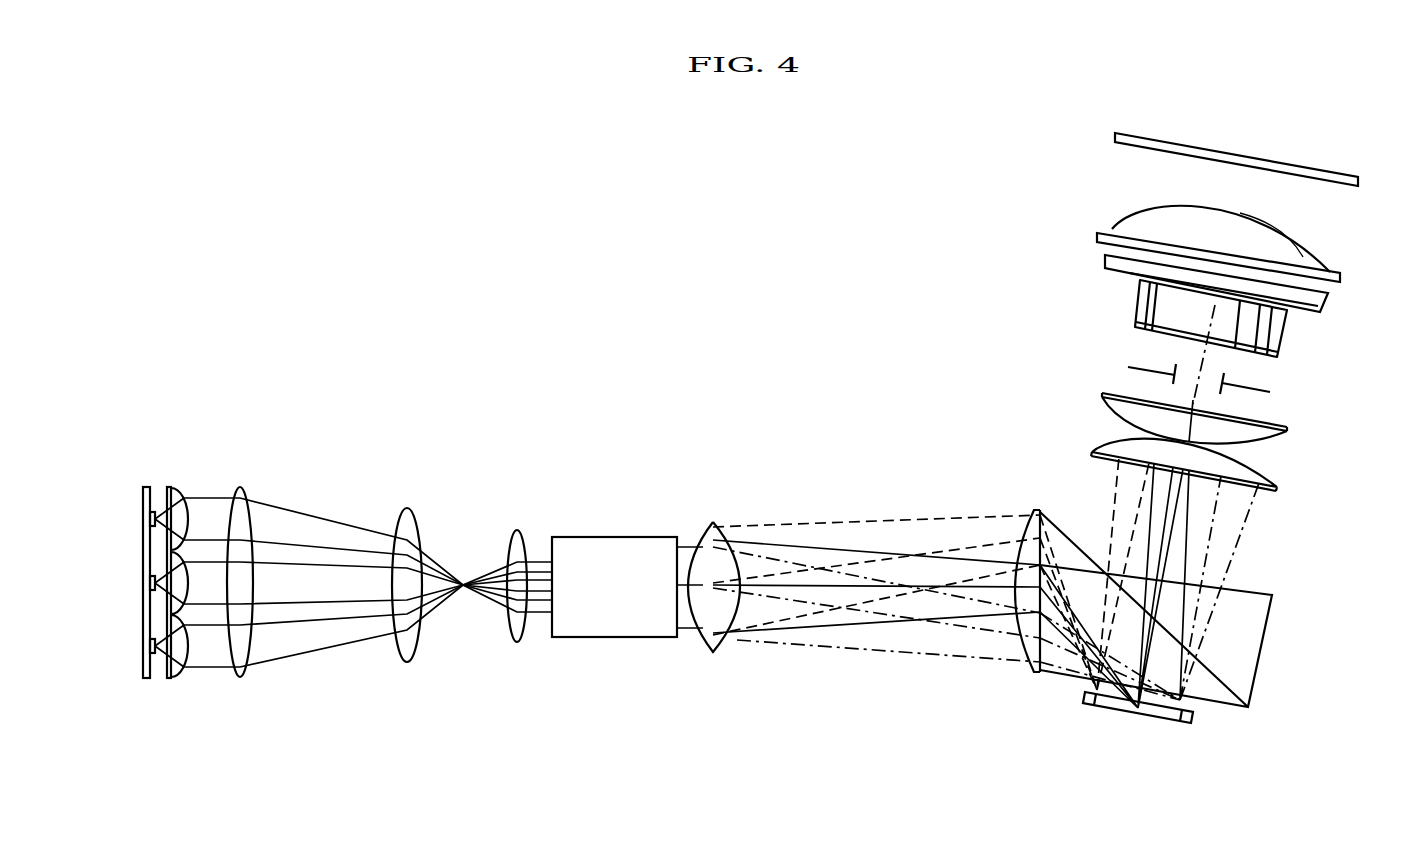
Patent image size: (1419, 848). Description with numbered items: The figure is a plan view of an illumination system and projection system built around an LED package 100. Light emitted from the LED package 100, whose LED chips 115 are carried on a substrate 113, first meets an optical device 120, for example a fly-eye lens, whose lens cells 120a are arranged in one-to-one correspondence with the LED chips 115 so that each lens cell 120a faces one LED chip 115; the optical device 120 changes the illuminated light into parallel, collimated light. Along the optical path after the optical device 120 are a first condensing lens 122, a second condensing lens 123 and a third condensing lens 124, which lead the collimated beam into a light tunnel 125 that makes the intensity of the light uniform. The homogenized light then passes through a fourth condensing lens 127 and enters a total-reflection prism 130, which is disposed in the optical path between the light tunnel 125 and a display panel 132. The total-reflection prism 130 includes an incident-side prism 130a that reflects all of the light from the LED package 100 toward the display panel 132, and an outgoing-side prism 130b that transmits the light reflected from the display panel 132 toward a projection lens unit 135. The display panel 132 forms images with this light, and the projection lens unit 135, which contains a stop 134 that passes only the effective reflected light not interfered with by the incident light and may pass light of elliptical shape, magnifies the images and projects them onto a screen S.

The LED package 100 is at (133, 490).
The substrate 113 is at (143, 487).
The LED chips 115 is at (170, 487).
The optical device 120 is at (168, 678).
The lens cells 120a is at (182, 674).
The first condensing lens 122 is at (240, 488).
The second condensing lens 123 is at (407, 508).
The third condensing lens 124 is at (517, 530).
The light tunnel 125 is at (615, 537).
The fourth condensing lens 127 is at (713, 522).
The total-reflection prism 130 is at (1100, 783).
The incident-side prism 130a is at (1065, 673).
The outgoing-side prism 130b is at (1230, 675).
The display panel 132 is at (1150, 719).
The stop 134 is at (1150, 367).
The projection lens unit 135 is at (1373, 252).
The screen S is at (1150, 152).